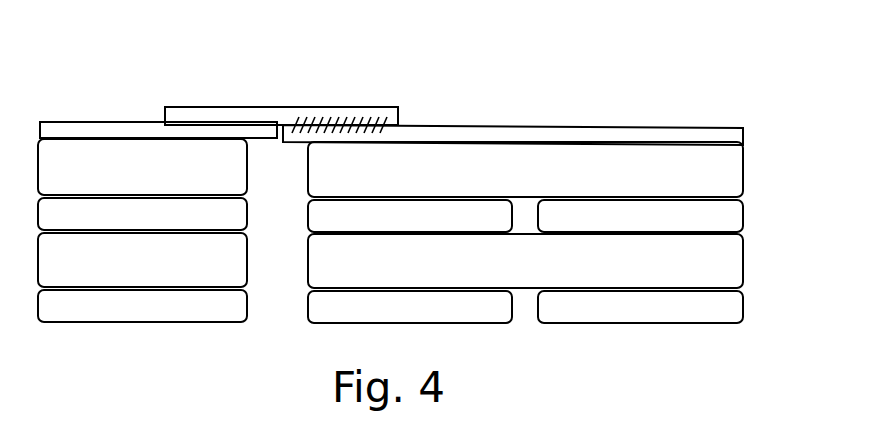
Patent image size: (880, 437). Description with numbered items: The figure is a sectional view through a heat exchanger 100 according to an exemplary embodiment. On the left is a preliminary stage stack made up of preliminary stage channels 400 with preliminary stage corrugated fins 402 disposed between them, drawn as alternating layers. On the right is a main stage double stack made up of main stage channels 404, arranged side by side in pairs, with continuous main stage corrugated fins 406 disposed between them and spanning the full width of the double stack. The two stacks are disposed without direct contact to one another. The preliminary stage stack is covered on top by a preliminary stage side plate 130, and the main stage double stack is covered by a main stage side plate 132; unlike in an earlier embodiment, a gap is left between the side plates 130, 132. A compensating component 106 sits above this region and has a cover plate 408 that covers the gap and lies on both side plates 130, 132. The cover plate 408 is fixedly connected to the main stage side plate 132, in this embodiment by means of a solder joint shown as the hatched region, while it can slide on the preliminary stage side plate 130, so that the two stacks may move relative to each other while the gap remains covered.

The heat exchanger 100 is at (607, 84).
The compensating component 106 is at (283, 93).
The cover plate 408 is at (337, 107).
The preliminary stage side plate 130 is at (90, 122).
The main stage side plate 132 is at (684, 127).
The preliminary stage channels 400 is at (142, 260).
The preliminary stage corrugated fins 402 is at (142, 213).
The main stage channels 404 is at (525, 262).
The continuous main stage corrugated fins 406 is at (525, 215).